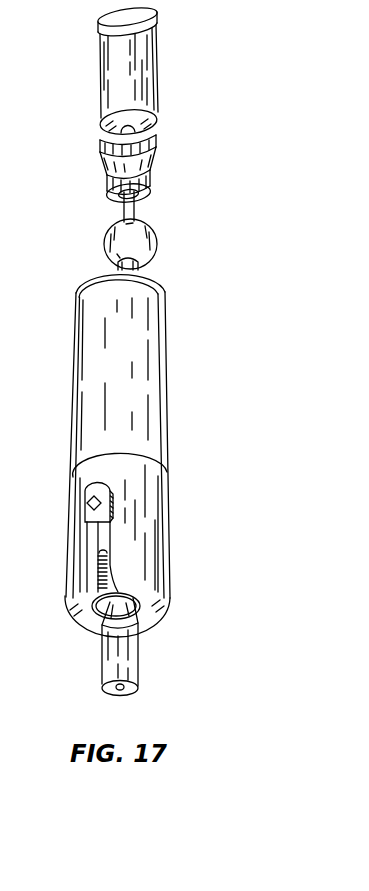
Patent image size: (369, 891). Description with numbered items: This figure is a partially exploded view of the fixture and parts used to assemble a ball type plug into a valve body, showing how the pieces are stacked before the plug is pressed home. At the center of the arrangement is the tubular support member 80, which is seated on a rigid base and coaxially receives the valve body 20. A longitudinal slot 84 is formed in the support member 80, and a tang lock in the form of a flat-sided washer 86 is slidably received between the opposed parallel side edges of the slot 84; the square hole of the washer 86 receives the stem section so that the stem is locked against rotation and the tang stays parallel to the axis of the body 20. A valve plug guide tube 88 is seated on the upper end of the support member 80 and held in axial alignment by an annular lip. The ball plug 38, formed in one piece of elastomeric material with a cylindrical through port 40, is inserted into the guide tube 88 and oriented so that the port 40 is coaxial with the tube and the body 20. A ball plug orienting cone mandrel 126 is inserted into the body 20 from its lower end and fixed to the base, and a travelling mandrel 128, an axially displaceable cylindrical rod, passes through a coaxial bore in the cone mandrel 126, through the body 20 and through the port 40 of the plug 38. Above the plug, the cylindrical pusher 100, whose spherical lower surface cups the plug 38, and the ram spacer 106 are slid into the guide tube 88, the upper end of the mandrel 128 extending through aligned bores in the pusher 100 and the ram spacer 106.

The ram spacer 106 is at (145, 83).
The cylindrical pusher 100 is at (158, 176).
The travelling mandrel 128 is at (123, 216).
The ball plug 38 is at (155, 246).
The through port 40 is at (122, 266).
The valve plug guide tube 88 is at (152, 385).
The tubular support member 80 is at (160, 517).
The flat-sided washer 86 is at (85, 513).
The longitudinal slot 84 is at (105, 554).
The valve body 20 is at (93, 607).
The ball plug orienting cone mandrel 126 is at (132, 688).